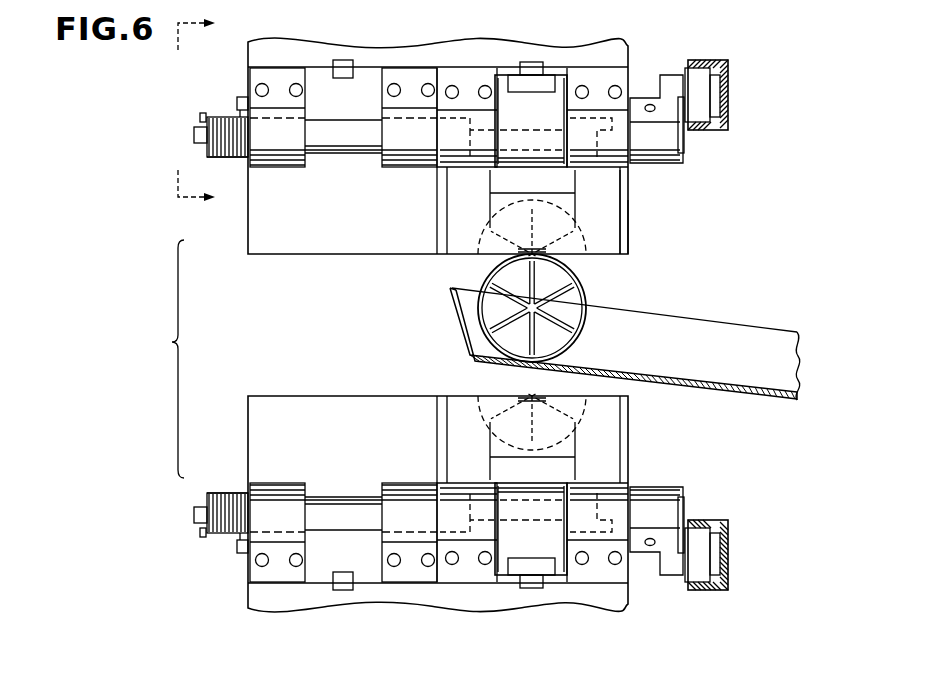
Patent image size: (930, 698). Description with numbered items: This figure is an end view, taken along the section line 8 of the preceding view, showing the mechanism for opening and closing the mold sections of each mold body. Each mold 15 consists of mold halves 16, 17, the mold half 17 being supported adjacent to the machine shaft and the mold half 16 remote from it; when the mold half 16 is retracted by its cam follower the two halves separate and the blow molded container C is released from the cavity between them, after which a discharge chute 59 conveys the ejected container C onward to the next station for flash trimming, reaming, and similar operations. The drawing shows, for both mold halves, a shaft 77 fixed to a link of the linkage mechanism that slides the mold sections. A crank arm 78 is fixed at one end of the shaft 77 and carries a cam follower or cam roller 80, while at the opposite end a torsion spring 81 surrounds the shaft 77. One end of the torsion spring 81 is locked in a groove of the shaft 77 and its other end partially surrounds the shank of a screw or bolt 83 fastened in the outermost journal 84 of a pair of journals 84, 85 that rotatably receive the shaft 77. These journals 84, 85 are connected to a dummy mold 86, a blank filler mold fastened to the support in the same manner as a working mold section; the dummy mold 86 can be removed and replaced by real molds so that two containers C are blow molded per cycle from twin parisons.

The section line 8- 8 is at (209, 116).
The mold 15 is at (655, 253).
The mold half 16 is at (606, 208).
The mold half 17 is at (353, 386).
The discharge chute 59 is at (733, 360).
The shaft 77 is at (197, 127).
The crank arm 78 is at (660, 160).
The cam follower 80 is at (700, 130).
The torsion spring 81 is at (213, 161).
The screw 83 is at (238, 99).
The journal 84 is at (270, 148).
The journal 85 is at (408, 150).
The dummy mold 86 is at (353, 226).
The container C is at (580, 295).